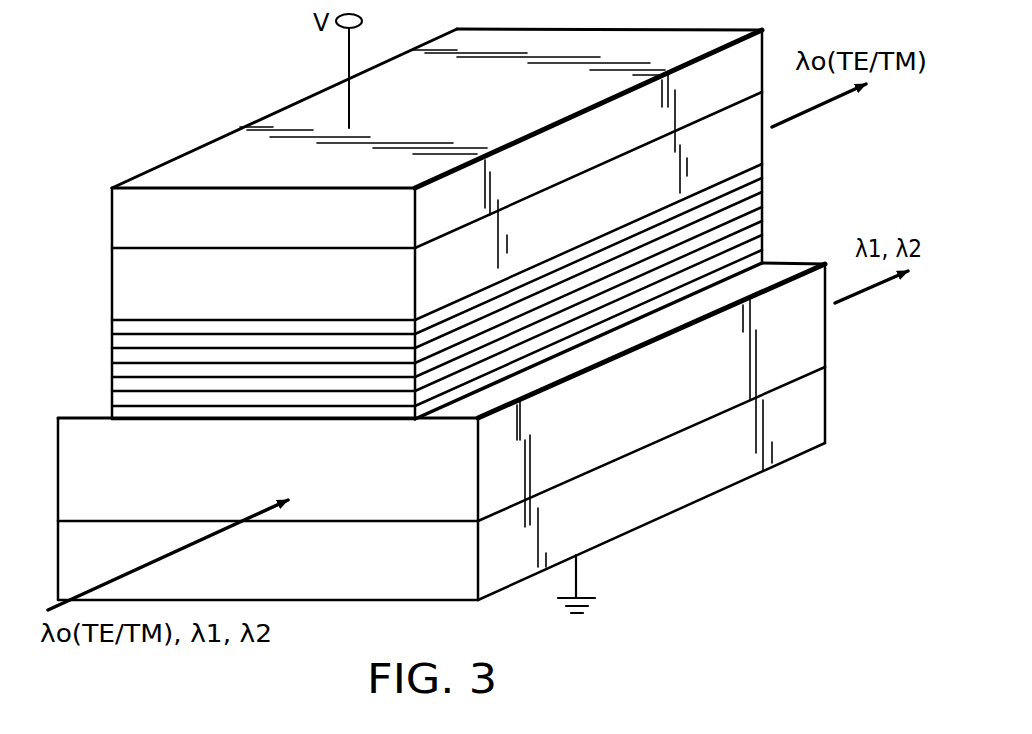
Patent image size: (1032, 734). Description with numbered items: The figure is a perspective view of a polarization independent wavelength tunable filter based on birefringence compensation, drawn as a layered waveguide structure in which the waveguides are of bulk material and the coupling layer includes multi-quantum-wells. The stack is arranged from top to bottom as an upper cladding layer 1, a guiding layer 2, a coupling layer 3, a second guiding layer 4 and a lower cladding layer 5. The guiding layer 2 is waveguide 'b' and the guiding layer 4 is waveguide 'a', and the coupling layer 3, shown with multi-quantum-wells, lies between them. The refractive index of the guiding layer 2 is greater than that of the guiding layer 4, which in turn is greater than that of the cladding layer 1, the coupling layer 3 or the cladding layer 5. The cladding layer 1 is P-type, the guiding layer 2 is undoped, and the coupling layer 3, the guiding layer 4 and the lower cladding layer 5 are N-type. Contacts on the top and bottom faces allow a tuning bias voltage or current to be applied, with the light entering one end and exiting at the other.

The cladding layer 1 is at (266, 230).
The guiding layer 2 is at (266, 290).
The coupling layer 3 is at (104, 320).
The guiding layer 4 is at (185, 487).
The cladding layer 5 is at (378, 579).